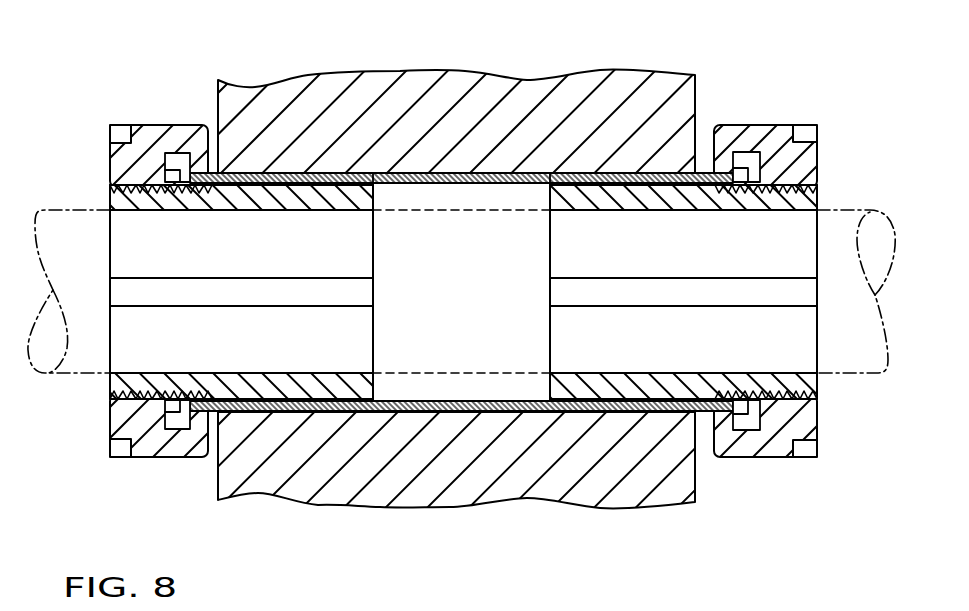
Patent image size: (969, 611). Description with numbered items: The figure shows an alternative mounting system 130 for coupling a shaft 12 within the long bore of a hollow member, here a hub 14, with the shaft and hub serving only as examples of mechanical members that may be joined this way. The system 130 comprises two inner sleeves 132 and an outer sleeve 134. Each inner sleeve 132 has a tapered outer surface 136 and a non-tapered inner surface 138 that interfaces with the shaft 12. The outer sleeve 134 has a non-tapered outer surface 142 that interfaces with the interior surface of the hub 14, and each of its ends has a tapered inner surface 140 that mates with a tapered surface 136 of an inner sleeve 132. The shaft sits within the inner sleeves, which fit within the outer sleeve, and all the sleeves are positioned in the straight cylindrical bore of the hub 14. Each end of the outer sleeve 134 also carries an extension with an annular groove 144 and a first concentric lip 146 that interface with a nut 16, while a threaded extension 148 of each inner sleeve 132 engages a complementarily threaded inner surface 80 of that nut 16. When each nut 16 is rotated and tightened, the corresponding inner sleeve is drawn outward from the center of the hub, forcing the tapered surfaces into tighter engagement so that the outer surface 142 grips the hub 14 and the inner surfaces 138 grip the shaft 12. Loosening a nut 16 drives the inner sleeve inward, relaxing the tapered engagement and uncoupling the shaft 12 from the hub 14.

The shaft 12 is at (840, 220).
The hub 14 is at (668, 500).
The nut 16 is at (127, 458).
The threaded inner surface 80 is at (150, 394).
The mounting system 130 is at (272, 517).
The inner sleeve 132 is at (353, 203).
The outer sleeve 134 is at (665, 175).
The tapered outer surface 136 is at (275, 203).
The non-tapered inner surface 138 is at (145, 212).
The tapered inner surface 140 is at (330, 178).
The non-tapered outer surface 142 is at (368, 175).
The annular groove 144 is at (195, 433).
The first concentric lip 146 is at (175, 420).
The threaded extension 148 is at (130, 397).